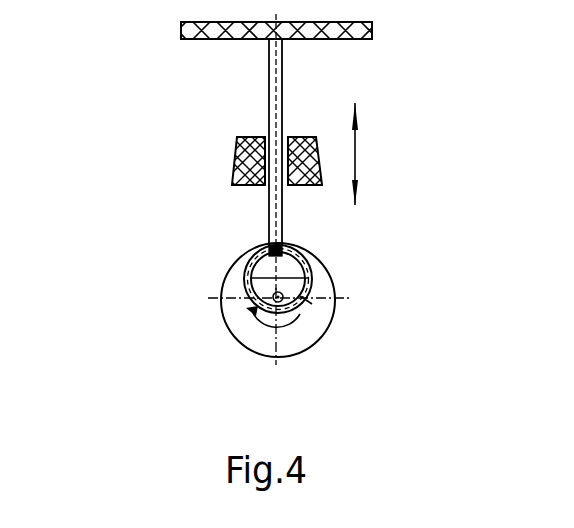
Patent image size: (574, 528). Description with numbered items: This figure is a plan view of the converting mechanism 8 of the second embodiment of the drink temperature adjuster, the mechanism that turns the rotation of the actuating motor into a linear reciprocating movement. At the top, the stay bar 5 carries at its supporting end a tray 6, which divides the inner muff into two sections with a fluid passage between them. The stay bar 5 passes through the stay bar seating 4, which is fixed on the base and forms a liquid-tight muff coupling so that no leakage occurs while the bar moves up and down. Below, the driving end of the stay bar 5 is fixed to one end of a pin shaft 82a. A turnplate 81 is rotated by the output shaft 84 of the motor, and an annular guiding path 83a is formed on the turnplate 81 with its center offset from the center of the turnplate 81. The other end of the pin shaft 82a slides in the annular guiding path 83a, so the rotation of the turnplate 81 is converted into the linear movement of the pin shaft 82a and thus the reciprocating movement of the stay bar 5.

The stay bar seating 4 is at (206, 171).
The stay bar 5 is at (172, 152).
The tray 6 is at (220, 46).
The converting mechanism 8 is at (360, 245).
The turnplate 81 is at (206, 320).
The pin shaft 82a is at (187, 289).
The annular guiding path 83a is at (380, 347).
The output shaft 84 is at (284, 297).